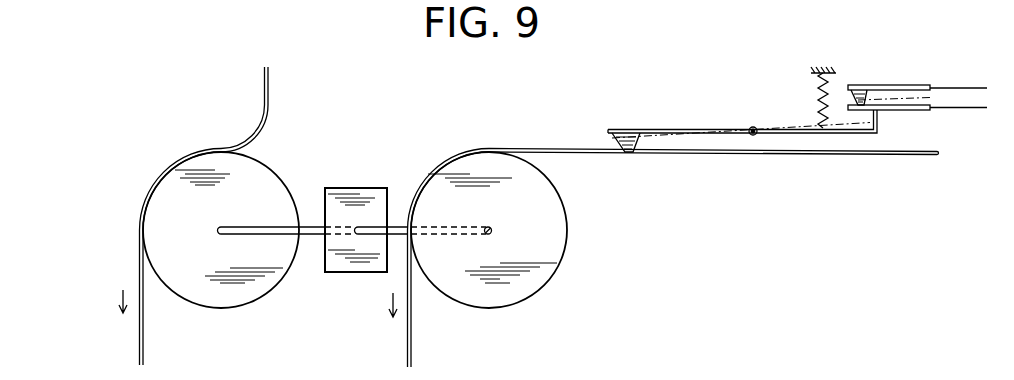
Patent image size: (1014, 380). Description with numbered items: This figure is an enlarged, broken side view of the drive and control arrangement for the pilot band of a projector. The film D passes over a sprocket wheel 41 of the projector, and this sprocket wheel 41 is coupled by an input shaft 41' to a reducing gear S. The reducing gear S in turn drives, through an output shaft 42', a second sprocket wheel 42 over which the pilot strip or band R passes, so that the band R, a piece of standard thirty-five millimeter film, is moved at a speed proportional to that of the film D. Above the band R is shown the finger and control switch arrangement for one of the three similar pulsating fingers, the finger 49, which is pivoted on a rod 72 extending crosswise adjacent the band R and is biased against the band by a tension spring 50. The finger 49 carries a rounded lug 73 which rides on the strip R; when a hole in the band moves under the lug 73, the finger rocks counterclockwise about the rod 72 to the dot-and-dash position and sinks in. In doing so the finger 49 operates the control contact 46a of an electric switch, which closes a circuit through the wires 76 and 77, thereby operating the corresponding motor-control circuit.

The sprocket wheel 41 is at (221, 244).
The input shaft 41' is at (286, 268).
The sprocket wheel 42 is at (517, 230).
The output shaft 42' is at (423, 191).
The reducing gear S is at (342, 189).
The film D is at (269, 112).
The pilot strip or band R is at (412, 360).
The pulsating finger 49 is at (697, 128).
The tension spring 50 is at (818, 103).
The rod 72 is at (752, 136).
The rounded lug 73 is at (628, 153).
The wire 76 is at (947, 110).
The wire 77 is at (948, 85).
The control contact 46a is at (886, 104).